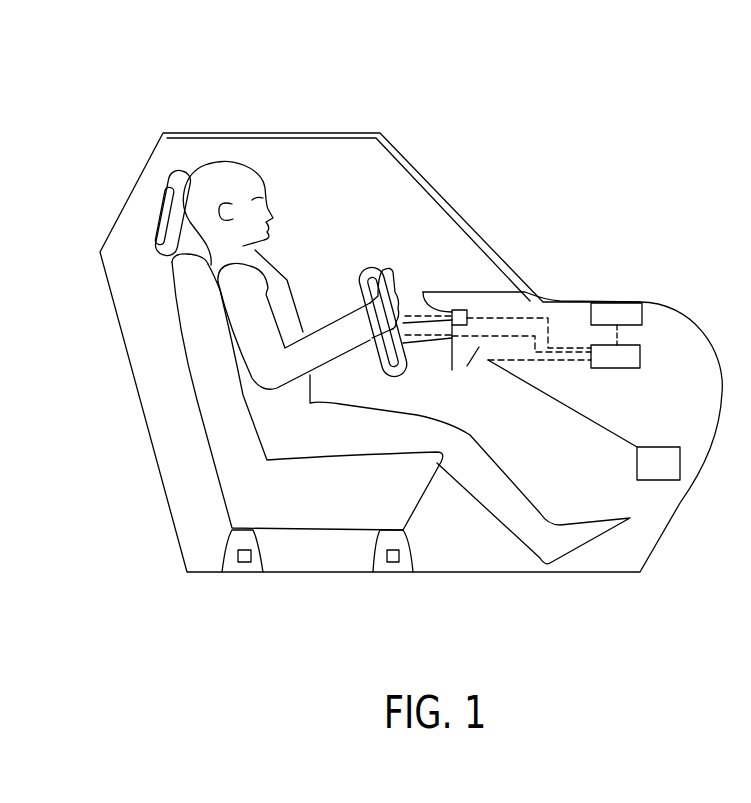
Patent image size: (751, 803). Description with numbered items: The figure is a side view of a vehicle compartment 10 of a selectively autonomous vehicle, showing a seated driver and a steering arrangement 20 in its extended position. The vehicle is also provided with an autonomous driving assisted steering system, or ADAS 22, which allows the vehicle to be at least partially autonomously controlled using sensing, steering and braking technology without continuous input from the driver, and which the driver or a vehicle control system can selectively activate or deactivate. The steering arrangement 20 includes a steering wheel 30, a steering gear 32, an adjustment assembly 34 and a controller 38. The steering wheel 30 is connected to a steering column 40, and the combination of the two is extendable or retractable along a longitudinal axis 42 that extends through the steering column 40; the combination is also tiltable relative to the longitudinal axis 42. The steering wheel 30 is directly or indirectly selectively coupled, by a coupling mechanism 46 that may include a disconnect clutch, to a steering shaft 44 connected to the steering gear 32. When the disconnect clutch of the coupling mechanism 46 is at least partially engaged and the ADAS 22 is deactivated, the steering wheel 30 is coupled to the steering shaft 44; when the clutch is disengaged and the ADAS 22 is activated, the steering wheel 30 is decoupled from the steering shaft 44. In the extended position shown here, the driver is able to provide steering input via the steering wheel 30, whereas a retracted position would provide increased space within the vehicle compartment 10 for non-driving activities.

The vehicle compartment 10 is at (280, 100).
The steering arrangement 20 is at (383, 234).
The autonomous driving assisted steering system (ADAS) 22 is at (642, 312).
The steering wheel 30 is at (384, 276).
The steering gear 32 is at (646, 447).
The adjustment assembly 34 is at (456, 310).
The controller 38 is at (641, 355).
The steering column 40 is at (452, 360).
The longitudinal axis 42 is at (420, 346).
The steering shaft 44 is at (540, 393).
The coupling mechanism 46 is at (466, 369).